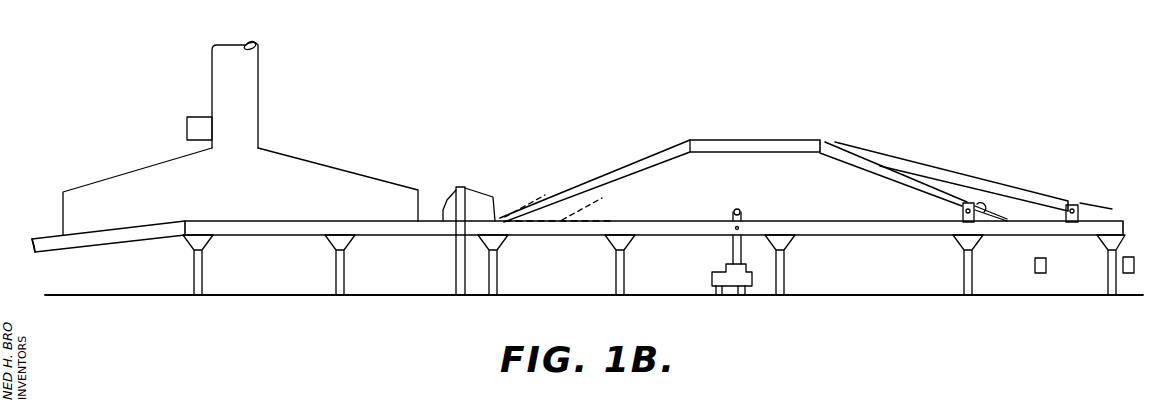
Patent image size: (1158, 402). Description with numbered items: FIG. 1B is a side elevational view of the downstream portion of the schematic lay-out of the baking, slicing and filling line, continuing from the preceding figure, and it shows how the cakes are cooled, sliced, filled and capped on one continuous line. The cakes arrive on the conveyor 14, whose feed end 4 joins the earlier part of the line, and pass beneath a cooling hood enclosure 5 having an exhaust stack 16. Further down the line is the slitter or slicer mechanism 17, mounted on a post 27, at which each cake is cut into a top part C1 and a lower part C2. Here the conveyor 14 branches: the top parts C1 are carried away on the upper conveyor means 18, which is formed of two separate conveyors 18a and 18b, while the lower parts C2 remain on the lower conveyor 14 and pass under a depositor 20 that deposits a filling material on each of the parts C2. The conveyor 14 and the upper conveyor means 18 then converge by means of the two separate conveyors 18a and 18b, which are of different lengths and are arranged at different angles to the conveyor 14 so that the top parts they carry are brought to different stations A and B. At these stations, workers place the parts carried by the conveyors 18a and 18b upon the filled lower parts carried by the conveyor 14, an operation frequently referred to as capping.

The conveyor feed end 4 is at (40, 238).
The housing / enclosure 5 is at (318, 177).
The conveyor 14 is at (434, 228).
The exhaust stack 16 is at (244, 100).
The slicer mechanism 17 is at (468, 203).
The upper conveyor means 18 is at (606, 168).
The conveyor 18a is at (968, 178).
The conveyor 18b is at (870, 163).
The depositor 20 is at (742, 210).
The post 27 is at (485, 162).
The top part of the cake C1 is at (518, 203).
The lower part of the cake C2 is at (598, 205).
The station A is at (1035, 262).
The station B is at (1128, 276).